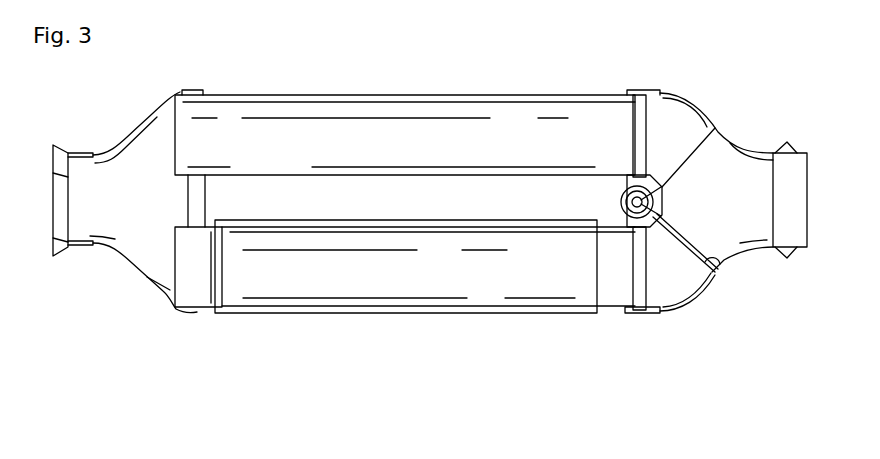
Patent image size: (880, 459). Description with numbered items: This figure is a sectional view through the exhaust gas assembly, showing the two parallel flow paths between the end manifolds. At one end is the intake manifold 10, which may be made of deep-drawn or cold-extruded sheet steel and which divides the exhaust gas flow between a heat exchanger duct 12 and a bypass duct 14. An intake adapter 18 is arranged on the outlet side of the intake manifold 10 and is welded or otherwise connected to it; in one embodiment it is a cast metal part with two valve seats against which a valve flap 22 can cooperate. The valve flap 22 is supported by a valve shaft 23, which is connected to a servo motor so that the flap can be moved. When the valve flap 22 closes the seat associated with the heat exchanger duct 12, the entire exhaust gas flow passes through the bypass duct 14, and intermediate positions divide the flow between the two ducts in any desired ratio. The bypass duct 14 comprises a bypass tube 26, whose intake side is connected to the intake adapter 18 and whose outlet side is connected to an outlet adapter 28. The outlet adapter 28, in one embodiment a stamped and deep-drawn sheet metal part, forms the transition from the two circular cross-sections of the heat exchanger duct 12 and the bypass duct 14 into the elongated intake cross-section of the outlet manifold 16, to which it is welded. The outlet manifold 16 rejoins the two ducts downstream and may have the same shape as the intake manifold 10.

The intake manifold 10 is at (747, 163).
The heat exchanger duct 12 is at (442, 324).
The bypass duct 14 is at (387, 177).
The outlet manifold 16 is at (145, 143).
The intake adapter 18 is at (642, 312).
The valve flap 22 is at (720, 257).
The valve shaft 23 is at (637, 200).
The bypass tube 26 is at (481, 176).
The outlet adapter 28 is at (186, 213).